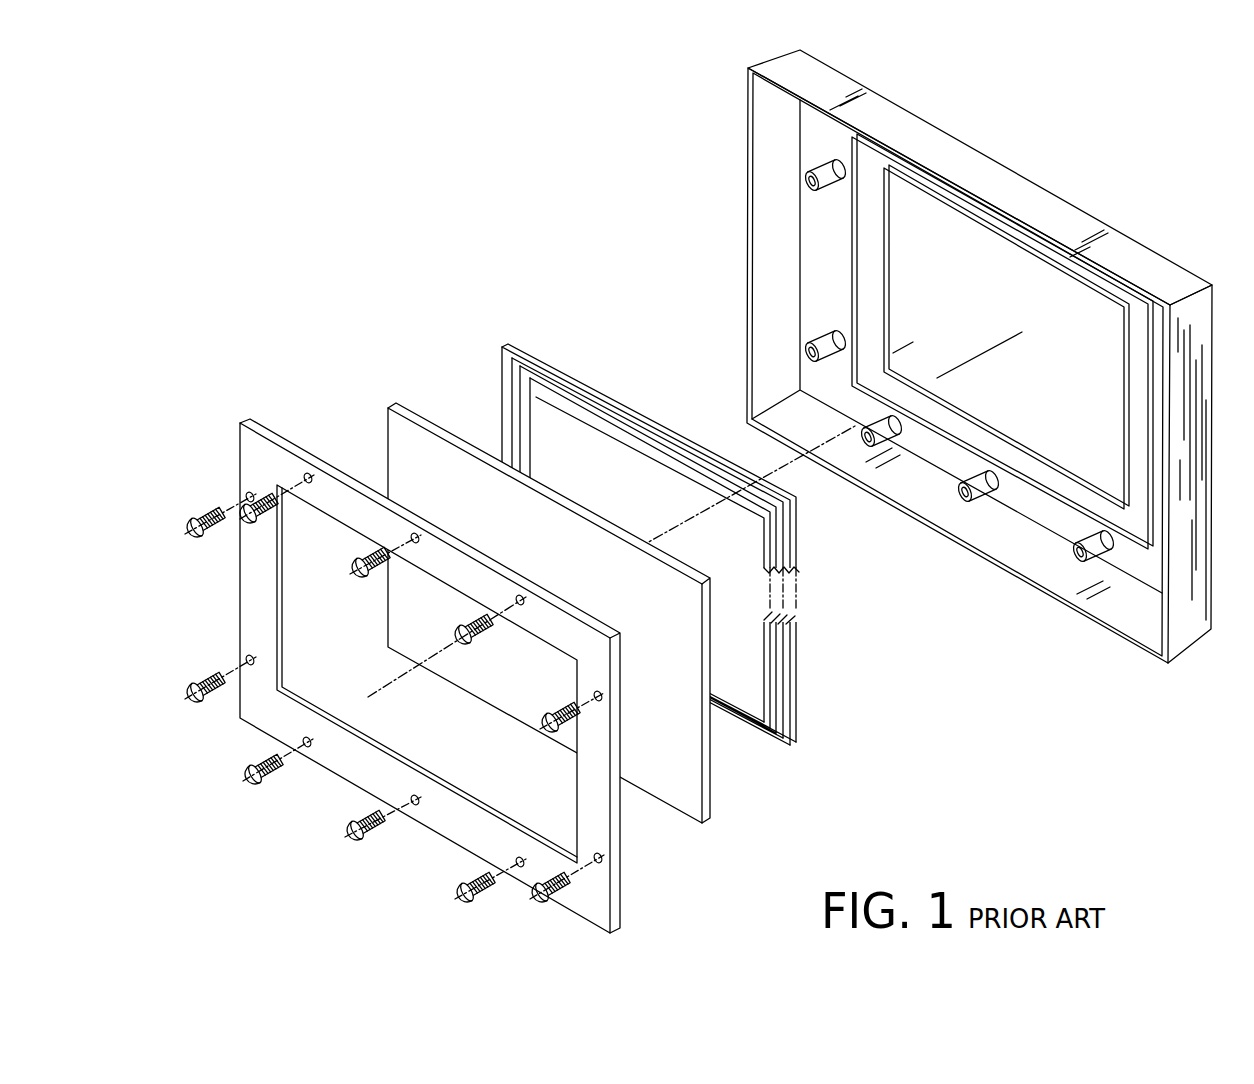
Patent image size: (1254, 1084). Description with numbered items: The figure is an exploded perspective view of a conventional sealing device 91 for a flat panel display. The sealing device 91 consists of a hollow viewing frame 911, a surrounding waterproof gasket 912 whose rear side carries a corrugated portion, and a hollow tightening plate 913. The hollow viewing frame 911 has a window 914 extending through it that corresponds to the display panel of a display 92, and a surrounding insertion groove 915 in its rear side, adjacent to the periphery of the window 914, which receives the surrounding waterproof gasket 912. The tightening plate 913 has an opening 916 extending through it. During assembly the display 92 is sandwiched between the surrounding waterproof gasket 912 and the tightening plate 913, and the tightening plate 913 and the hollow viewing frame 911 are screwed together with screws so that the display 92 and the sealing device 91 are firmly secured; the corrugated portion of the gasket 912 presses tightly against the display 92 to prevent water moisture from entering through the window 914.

The sealing device 91 is at (921, 92).
The hollow viewing frame 911 is at (1000, 184).
The surrounding waterproof gasket 912 is at (511, 346).
The hollow tightening plate 913 is at (243, 430).
The window 914 is at (918, 266).
The surrounding insertion groove 915 is at (874, 206).
The opening 916 is at (303, 557).
The display 92 is at (396, 422).